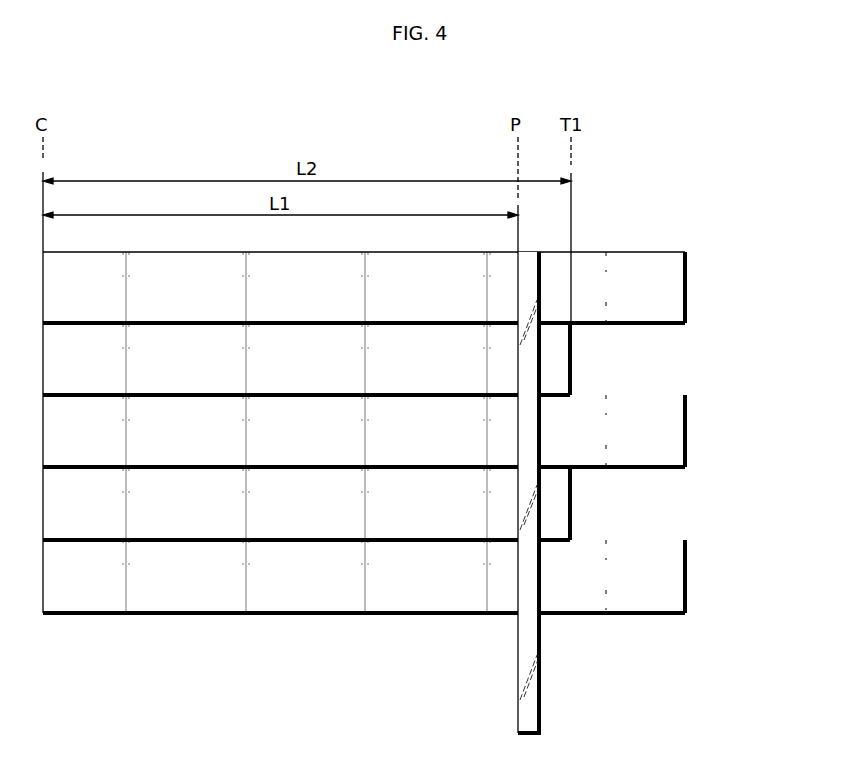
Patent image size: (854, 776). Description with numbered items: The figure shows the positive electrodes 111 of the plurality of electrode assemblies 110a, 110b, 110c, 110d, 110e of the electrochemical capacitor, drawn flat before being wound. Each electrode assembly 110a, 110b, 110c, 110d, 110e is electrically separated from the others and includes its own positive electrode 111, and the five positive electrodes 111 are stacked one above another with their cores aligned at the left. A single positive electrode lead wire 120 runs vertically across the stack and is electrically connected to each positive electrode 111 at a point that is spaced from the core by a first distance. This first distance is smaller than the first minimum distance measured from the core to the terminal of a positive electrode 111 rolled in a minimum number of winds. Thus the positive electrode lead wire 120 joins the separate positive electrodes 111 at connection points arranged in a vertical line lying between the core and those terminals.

The positive electrode 111 is at (423, 432).
The electrode assembly 110a is at (683, 293).
The electrode assembly 110b is at (568, 365).
The electrode assembly 110c is at (683, 438).
The electrode assembly 110d is at (568, 509).
The electrode assembly 110e is at (683, 582).
The positive electrode lead wire 120 is at (535, 696).